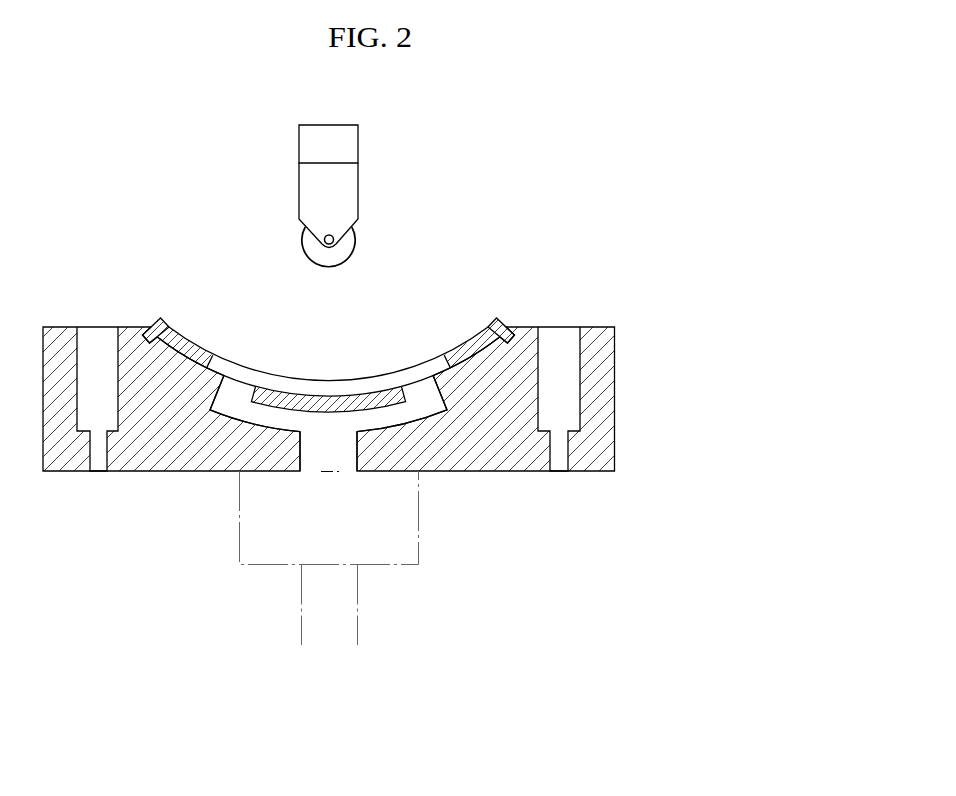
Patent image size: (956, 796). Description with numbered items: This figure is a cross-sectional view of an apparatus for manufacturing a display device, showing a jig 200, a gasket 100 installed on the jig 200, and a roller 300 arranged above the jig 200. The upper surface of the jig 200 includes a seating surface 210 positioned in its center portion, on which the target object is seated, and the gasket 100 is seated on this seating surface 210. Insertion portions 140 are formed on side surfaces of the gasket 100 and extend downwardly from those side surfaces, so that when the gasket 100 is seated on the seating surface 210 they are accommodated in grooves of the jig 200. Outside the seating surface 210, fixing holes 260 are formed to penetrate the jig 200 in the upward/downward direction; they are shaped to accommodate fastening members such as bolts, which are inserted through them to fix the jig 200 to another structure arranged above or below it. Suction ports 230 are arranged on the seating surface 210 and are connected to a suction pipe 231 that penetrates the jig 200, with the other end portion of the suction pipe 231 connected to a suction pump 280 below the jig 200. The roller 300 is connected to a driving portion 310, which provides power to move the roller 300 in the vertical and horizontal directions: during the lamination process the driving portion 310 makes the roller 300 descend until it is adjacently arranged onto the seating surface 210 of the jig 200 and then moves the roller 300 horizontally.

The gasket 100 is at (300, 388).
The insertion portion 140 is at (511, 340).
The jig 200 is at (392, 372).
The seating surface 210 is at (359, 385).
The suction port 230 is at (421, 390).
The suction pipe 231 is at (332, 448).
The fixing hole 260 is at (567, 331).
The suction pump 280 is at (420, 537).
The roller 300 is at (360, 196).
The driving portion 310 is at (353, 145).